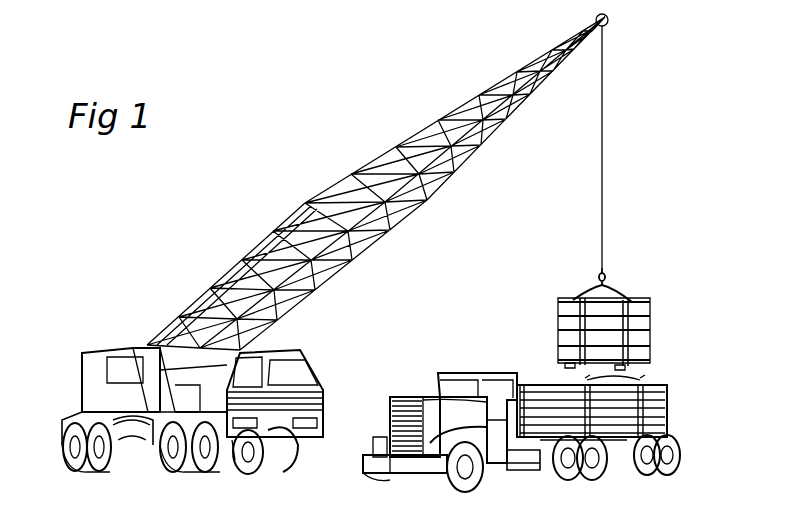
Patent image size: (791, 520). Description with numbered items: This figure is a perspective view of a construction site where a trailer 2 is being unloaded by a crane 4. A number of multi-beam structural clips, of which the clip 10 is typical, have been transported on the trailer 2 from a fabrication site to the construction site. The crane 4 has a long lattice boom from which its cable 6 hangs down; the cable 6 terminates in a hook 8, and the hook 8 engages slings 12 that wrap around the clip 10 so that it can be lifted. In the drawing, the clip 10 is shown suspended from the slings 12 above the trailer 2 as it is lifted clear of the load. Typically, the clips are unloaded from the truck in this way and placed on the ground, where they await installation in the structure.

The trailer 2 is at (608, 463).
The crane 4 is at (90, 392).
The cable 6 is at (603, 210).
The hook 8 is at (607, 262).
The multi-beam structural clip 10 is at (630, 308).
The slings 12 is at (588, 283).